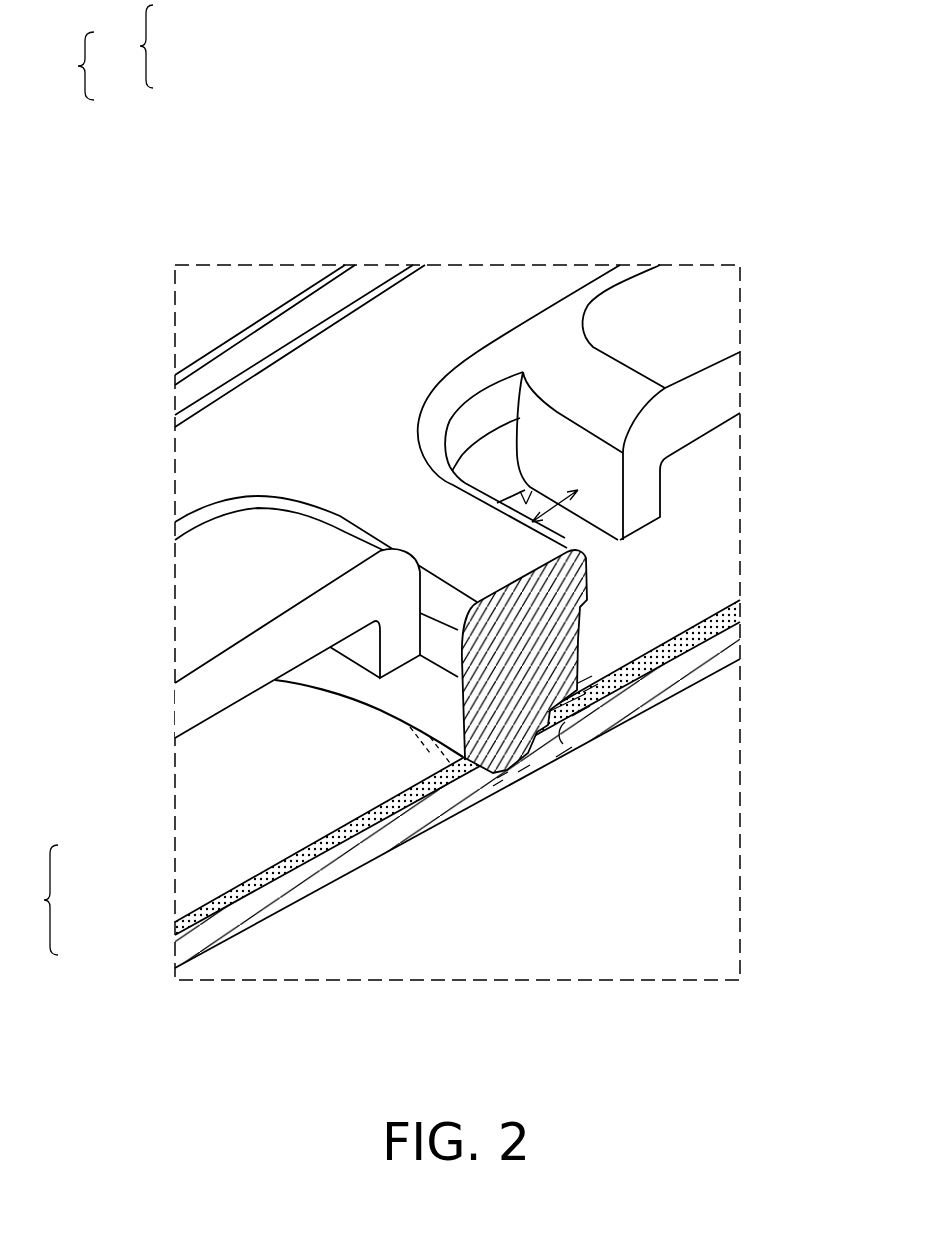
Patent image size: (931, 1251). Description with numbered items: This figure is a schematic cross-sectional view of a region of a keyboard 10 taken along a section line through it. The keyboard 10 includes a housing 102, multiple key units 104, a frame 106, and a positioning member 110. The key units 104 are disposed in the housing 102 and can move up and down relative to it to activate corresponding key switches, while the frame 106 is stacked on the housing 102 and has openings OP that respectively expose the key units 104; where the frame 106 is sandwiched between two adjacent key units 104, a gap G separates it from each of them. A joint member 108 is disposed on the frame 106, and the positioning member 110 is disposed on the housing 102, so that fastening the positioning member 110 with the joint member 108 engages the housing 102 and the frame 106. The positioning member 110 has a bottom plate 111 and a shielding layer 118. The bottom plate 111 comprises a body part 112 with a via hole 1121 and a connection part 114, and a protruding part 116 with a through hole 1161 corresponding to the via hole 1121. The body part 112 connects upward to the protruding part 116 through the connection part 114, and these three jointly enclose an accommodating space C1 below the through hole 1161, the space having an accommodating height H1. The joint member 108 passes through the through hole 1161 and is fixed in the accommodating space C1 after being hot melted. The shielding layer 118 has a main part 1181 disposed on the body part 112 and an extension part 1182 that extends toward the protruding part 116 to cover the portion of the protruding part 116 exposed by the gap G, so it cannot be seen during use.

The keyboard 10 is at (497, 241).
The housing 102 is at (733, 653).
The key units 104 is at (722, 327).
The frame 106 is at (190, 463).
The joint member 108 is at (485, 787).
The positioning member 110 is at (67, 66).
The bottom plate 111 is at (125, 46).
The body part 112 is at (768, 636).
The connection part 114 is at (768, 743).
The protruding part 116 is at (768, 787).
The shielding layer 118 is at (67, 514).
The main part 1181 is at (175, 935).
The extension part 1182 is at (460, 762).
The via hole 1121 is at (560, 750).
The through hole 1161 is at (535, 765).
The openings OP is at (526, 504).
The gap G is at (550, 512).
The accommodating height H1 is at (503, 780).
The accommodating space C1 is at (523, 777).